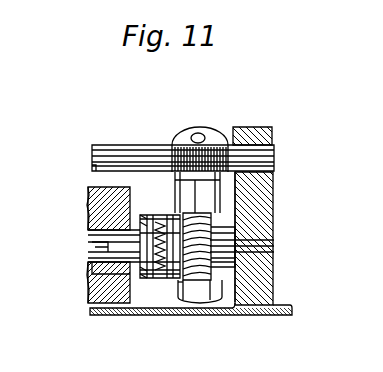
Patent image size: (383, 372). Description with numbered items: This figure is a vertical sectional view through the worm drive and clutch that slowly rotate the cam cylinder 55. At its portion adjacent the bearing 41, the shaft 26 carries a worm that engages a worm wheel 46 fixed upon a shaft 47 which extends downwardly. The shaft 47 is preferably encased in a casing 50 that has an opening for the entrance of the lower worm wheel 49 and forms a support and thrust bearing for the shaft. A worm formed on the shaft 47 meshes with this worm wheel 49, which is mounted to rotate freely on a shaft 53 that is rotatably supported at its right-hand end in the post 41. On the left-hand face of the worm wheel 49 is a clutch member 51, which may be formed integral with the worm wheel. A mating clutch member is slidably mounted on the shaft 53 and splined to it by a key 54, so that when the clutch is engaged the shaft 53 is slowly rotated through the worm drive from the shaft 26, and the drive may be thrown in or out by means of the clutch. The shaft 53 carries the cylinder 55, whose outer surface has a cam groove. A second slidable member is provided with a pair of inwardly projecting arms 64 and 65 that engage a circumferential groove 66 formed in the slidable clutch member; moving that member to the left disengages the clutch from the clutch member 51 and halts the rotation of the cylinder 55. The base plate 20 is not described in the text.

The base plate 20 is at (215, 310).
The shaft 26 is at (262, 152).
The bearing 41 is at (263, 203).
The worm wheel 46 is at (216, 135).
The shaft 47 is at (194, 137).
The worm wheel 49 is at (273, 220).
The casing 50 is at (205, 184).
The clutch member 51 is at (177, 285).
The shaft 53 is at (93, 252).
The key 54 is at (88, 238).
The cylinder 55 is at (98, 200).
The arm 64 is at (147, 214).
The arm 65 is at (158, 280).
The circumferential groove 66 is at (98, 273).